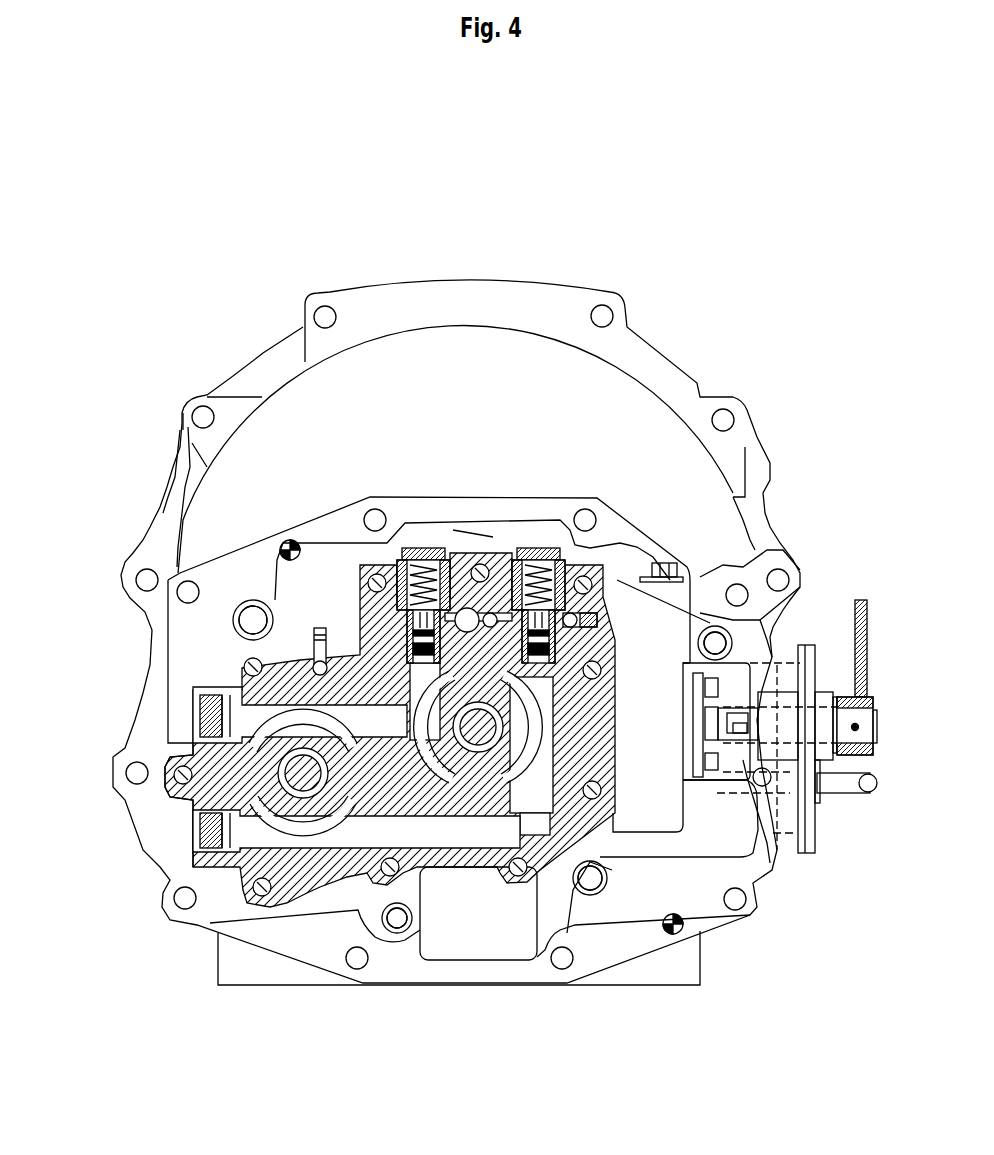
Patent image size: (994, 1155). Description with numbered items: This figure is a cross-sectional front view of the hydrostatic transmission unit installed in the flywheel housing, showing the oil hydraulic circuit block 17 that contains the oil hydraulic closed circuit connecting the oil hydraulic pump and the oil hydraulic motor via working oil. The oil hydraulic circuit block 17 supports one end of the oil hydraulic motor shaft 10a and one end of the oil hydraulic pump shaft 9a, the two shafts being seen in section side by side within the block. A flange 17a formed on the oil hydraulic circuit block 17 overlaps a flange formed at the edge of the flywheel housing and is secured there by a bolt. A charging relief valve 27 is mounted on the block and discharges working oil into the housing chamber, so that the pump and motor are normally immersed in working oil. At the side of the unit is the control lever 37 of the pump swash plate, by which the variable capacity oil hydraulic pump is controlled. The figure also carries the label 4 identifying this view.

The clutch housing 4 is at (483, 533).
The charging relief valve 27 is at (497, 600).
The flange 17a is at (667, 623).
The control lever of a pump swash plate 37 is at (867, 690).
The oil hydraulic circuit block 17 is at (597, 725).
The oil hydraulic motor shaft 10a is at (262, 815).
The oil hydraulic pump shaft 9a is at (483, 735).